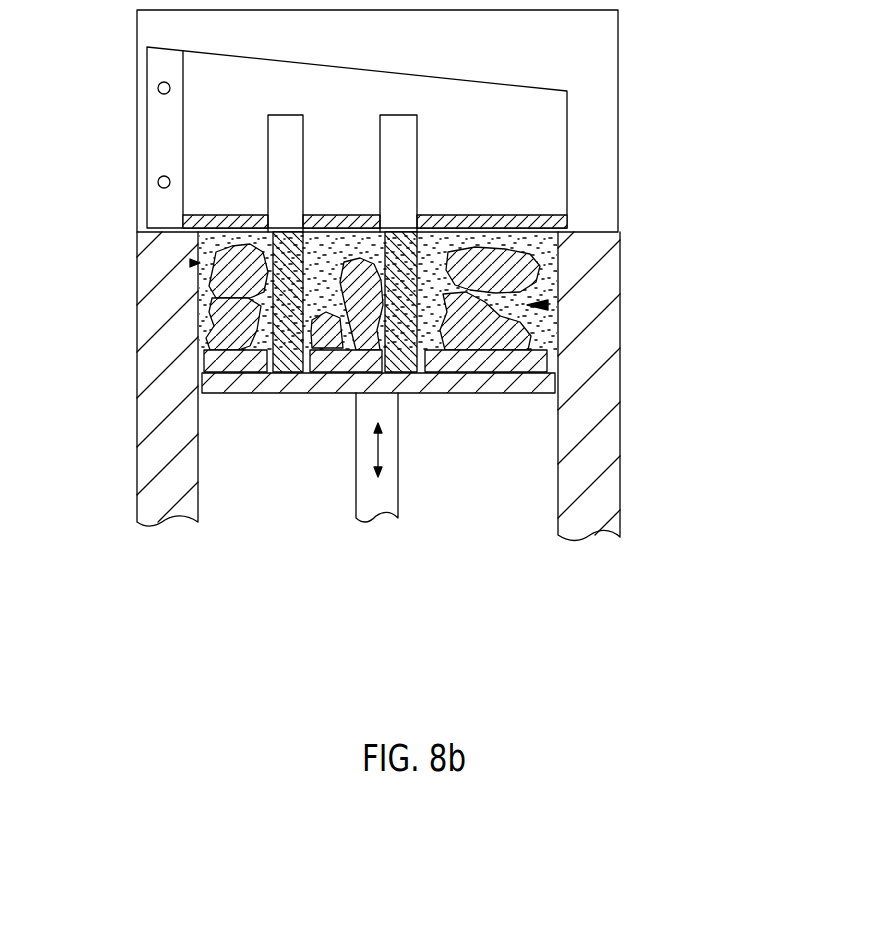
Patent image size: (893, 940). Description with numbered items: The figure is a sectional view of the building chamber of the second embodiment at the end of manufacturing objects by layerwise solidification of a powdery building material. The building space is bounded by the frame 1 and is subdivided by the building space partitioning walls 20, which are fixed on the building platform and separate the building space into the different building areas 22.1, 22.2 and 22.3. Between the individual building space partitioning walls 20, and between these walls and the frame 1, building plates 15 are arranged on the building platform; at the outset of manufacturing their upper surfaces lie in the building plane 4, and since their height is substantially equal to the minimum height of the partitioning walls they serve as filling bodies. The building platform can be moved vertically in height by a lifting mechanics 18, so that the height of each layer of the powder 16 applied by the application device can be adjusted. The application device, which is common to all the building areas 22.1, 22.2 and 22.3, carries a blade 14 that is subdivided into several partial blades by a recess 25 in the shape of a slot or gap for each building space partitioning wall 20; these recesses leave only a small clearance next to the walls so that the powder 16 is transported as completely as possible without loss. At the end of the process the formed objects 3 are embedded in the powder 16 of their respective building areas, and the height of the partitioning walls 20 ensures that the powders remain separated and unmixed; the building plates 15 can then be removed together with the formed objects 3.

The frame 1 is at (178, 440).
The object 3 is at (202, 330).
The building plane 4 is at (583, 237).
The blade 14 is at (527, 215).
The building plate 15 is at (224, 362).
The powder 16 is at (198, 232).
The lifting mechanics 18 is at (383, 453).
The building space partitioning wall 20 is at (202, 298).
The building area 22.1 is at (190, 263).
The building area 22.2 is at (300, 345).
The building area 22.3 is at (548, 305).
The recess 25 is at (268, 135).